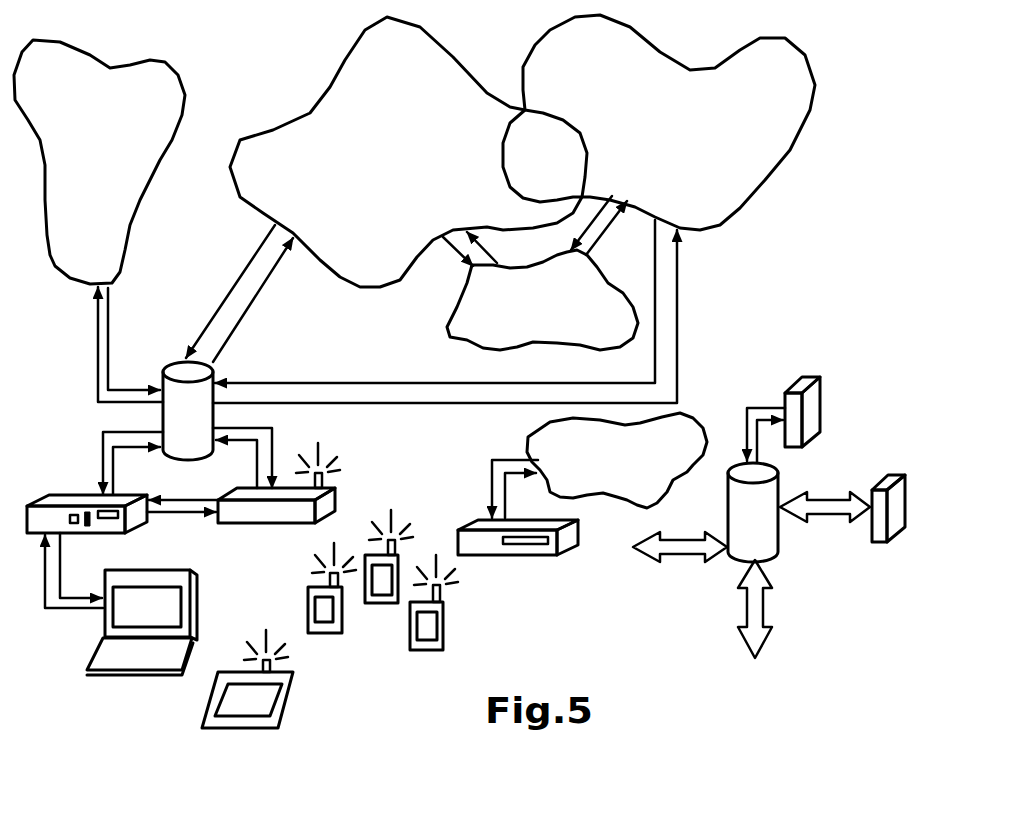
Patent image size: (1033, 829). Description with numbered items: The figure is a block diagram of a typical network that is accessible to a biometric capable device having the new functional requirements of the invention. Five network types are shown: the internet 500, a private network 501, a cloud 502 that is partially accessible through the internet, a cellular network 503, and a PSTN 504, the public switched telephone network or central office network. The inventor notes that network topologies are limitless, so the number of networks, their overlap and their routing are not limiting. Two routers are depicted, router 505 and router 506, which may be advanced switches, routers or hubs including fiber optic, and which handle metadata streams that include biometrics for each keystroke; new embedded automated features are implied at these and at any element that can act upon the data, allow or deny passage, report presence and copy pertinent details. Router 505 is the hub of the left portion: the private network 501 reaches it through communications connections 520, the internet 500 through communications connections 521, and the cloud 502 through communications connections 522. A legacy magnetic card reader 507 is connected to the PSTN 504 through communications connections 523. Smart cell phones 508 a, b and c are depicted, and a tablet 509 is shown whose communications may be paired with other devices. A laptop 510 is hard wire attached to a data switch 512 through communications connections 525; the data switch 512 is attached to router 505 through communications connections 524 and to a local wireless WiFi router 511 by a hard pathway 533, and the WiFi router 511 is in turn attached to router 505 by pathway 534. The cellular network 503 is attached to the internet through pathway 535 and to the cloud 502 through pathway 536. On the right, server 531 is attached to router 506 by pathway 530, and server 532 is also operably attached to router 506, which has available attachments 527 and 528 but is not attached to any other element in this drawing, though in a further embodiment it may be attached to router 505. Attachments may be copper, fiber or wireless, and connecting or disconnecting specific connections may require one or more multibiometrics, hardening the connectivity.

The internet 500 is at (406, 152).
The private network 501 is at (99, 162).
The cloud 502 is at (669, 122).
The cellular network 503 is at (542, 300).
The PSTN 504 is at (617, 460).
The router 505 is at (188, 411).
The router 506 is at (753, 512).
The legacy magnetic card reader 507 is at (518, 537).
The smart cell phones 508 is at (383, 580).
The tablet 509 is at (247, 679).
The laptop 510 is at (142, 622).
The wireless WiFi router 511 is at (279, 483).
The data switch 512 is at (87, 514).
The communications connections 520 is at (466, 412).
The communications connections 521 is at (239, 293).
The communications connections 522 is at (445, 311).
The communications connections 523 is at (506, 478).
The communications connections 524 is at (133, 452).
The communications connections 525 is at (68, 585).
The available attachment 527 is at (741, 612).
The available attachment 528 is at (680, 555).
The pathway 530 is at (759, 423).
The server 531 is at (813, 401).
The server 532 is at (900, 519).
The hard pathway 533 is at (182, 518).
The pathway 534 is at (242, 449).
The pathway 535 is at (464, 253).
The pathway 536 is at (603, 225).